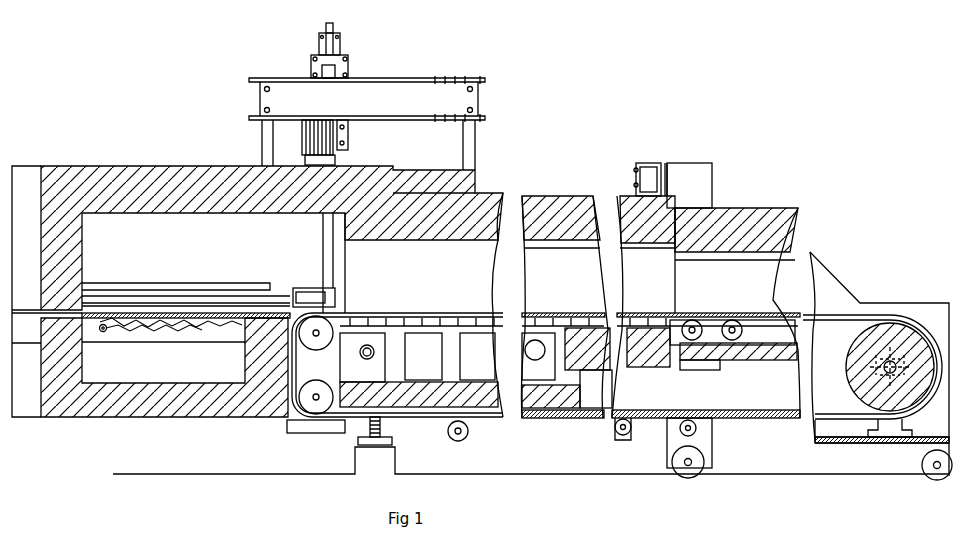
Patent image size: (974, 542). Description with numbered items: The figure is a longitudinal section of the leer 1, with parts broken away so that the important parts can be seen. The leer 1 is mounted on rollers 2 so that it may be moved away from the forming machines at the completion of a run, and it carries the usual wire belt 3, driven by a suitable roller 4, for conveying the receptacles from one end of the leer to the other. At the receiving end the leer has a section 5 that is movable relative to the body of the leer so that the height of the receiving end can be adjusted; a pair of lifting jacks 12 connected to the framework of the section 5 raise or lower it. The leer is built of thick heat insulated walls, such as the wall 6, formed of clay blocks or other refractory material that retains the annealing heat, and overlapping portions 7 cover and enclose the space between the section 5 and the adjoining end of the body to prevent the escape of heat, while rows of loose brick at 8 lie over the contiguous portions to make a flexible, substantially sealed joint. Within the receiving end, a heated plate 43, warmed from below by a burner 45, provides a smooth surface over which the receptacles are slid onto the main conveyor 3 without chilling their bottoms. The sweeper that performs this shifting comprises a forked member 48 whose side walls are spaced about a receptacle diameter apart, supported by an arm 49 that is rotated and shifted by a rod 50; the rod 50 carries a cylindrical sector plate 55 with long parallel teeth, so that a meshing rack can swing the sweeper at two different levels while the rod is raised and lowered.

The leer 1 is at (557, 208).
The rollers 2 is at (690, 473).
The wire belt 3 is at (840, 315).
The roller 4 is at (897, 337).
The section 5 is at (484, 207).
The wall 6 is at (437, 232).
The overlapping portions 7 is at (698, 217).
The rows of loose brick 8 is at (692, 202).
The lifting jacks 12 is at (381, 430).
The plate 43 is at (137, 322).
The burner 45 is at (104, 333).
The forked member 48 is at (200, 290).
The arm 49 is at (311, 298).
The rod 50 is at (327, 255).
The sector plate 55 is at (305, 132).